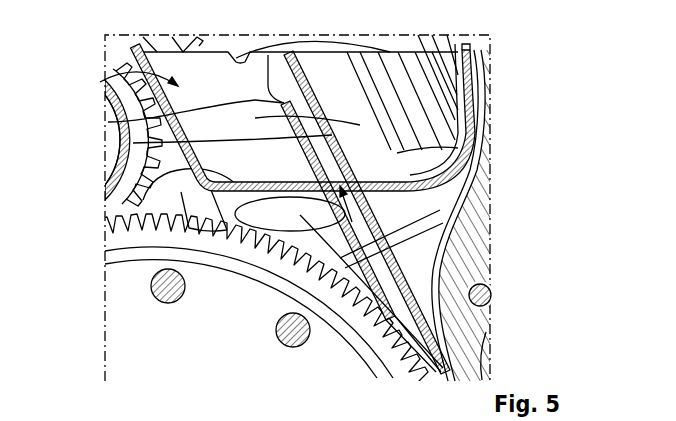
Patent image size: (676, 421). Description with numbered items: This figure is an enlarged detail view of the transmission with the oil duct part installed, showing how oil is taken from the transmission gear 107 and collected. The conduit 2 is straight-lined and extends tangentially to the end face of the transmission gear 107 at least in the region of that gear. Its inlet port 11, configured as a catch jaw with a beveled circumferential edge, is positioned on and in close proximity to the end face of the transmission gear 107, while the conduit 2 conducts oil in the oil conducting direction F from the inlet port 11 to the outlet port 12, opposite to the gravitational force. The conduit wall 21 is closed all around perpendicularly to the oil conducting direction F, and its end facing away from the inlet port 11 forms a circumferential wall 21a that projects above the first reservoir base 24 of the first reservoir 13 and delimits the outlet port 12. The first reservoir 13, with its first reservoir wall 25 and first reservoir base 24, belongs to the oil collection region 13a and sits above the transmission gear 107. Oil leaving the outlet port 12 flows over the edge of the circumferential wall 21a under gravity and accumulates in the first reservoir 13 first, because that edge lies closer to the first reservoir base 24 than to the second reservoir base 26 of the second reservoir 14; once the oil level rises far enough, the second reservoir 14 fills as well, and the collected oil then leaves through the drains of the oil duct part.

The conduit 2 is at (400, 200).
The inlet port 11 is at (465, 354).
The outlet port 12 is at (130, 127).
The first reservoir 13 is at (97, 134).
The oil collection region 13a is at (121, 68).
The second reservoir 14 is at (357, 110).
The conduit wall 21 is at (425, 258).
The circumferential wall 21a is at (138, 143).
The first reservoir base 24 is at (190, 182).
The first reservoir wall 25 is at (118, 100).
The second reservoir base 26 is at (420, 157).
The oil conducting direction F is at (420, 224).
The transmission gear 107 is at (135, 360).